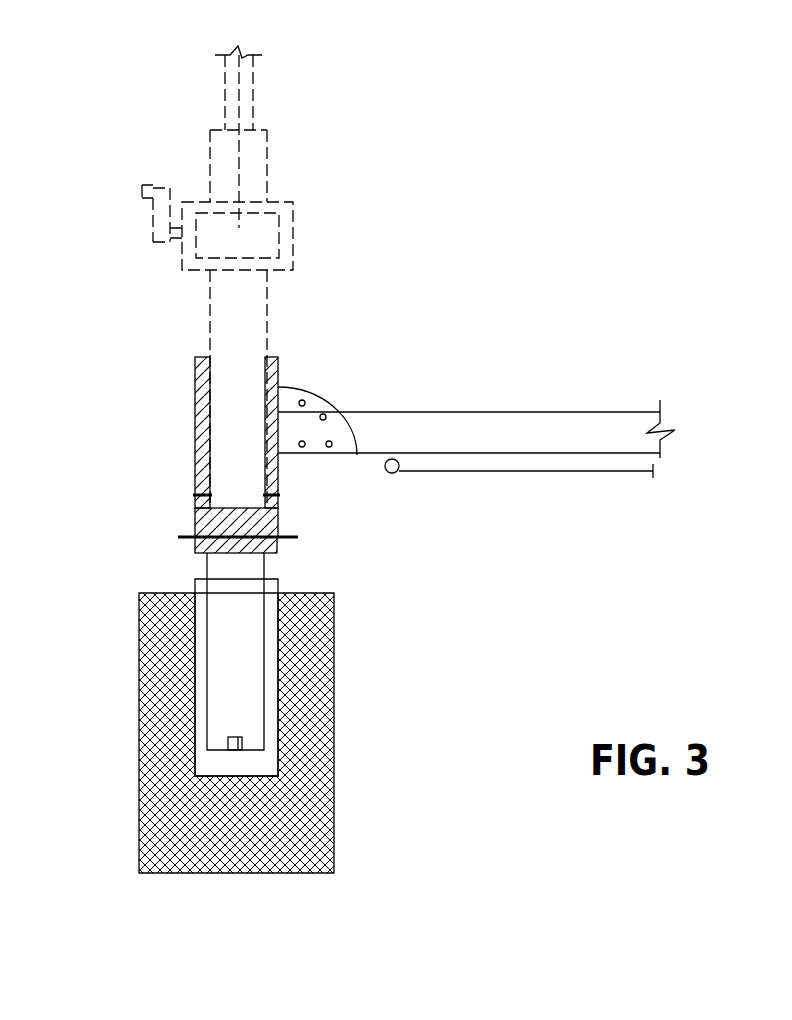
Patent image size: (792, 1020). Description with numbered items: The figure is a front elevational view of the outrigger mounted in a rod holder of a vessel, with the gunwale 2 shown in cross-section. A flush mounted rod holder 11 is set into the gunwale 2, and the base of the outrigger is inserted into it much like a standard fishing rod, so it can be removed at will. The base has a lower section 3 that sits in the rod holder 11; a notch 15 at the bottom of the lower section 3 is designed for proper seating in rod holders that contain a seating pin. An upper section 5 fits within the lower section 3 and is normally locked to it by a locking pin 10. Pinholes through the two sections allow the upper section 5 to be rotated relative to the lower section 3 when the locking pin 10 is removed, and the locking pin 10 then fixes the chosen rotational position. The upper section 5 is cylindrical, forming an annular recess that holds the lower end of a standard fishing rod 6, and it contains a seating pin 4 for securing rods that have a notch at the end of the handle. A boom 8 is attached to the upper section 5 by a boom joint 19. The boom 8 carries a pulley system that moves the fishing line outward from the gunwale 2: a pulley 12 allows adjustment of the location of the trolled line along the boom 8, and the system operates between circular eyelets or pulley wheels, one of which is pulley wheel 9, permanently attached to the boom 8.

The gunwale 2 is at (139, 593).
The lower section 3 is at (213, 580).
The seating pin 4 is at (195, 495).
The upper section 5 is at (195, 425).
The fishing rod 6 is at (210, 315).
The boom 8 is at (423, 418).
The pulley wheel 9 is at (395, 473).
The locking pin 10 is at (298, 537).
The rod holder 11 is at (280, 590).
The pulley 12 is at (470, 478).
The notch 15 is at (243, 741).
The boom joint 19 is at (318, 398).